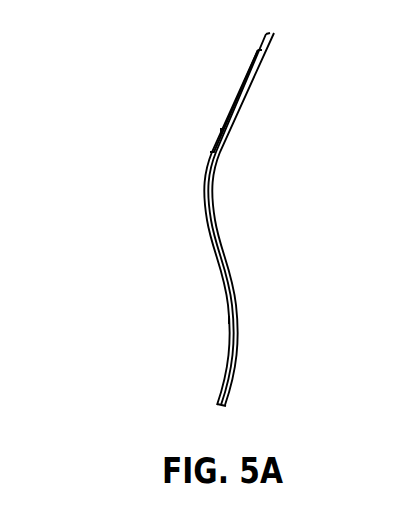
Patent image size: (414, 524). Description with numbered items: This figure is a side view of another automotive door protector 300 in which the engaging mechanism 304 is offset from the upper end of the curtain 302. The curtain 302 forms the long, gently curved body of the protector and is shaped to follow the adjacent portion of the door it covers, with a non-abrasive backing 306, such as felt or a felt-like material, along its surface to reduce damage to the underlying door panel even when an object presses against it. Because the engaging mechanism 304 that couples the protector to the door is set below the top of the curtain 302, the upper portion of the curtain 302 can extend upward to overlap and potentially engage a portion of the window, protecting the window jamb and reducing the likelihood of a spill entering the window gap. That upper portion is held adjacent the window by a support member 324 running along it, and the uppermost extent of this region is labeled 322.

The automotive door protector 300 is at (106, 193).
The curtain 302 is at (254, 231).
The engaging mechanism 304 is at (221, 132).
The non-abrasive backing 306 is at (228, 320).
The proximal end 322 is at (271, 35).
The support member 324 is at (239, 83).